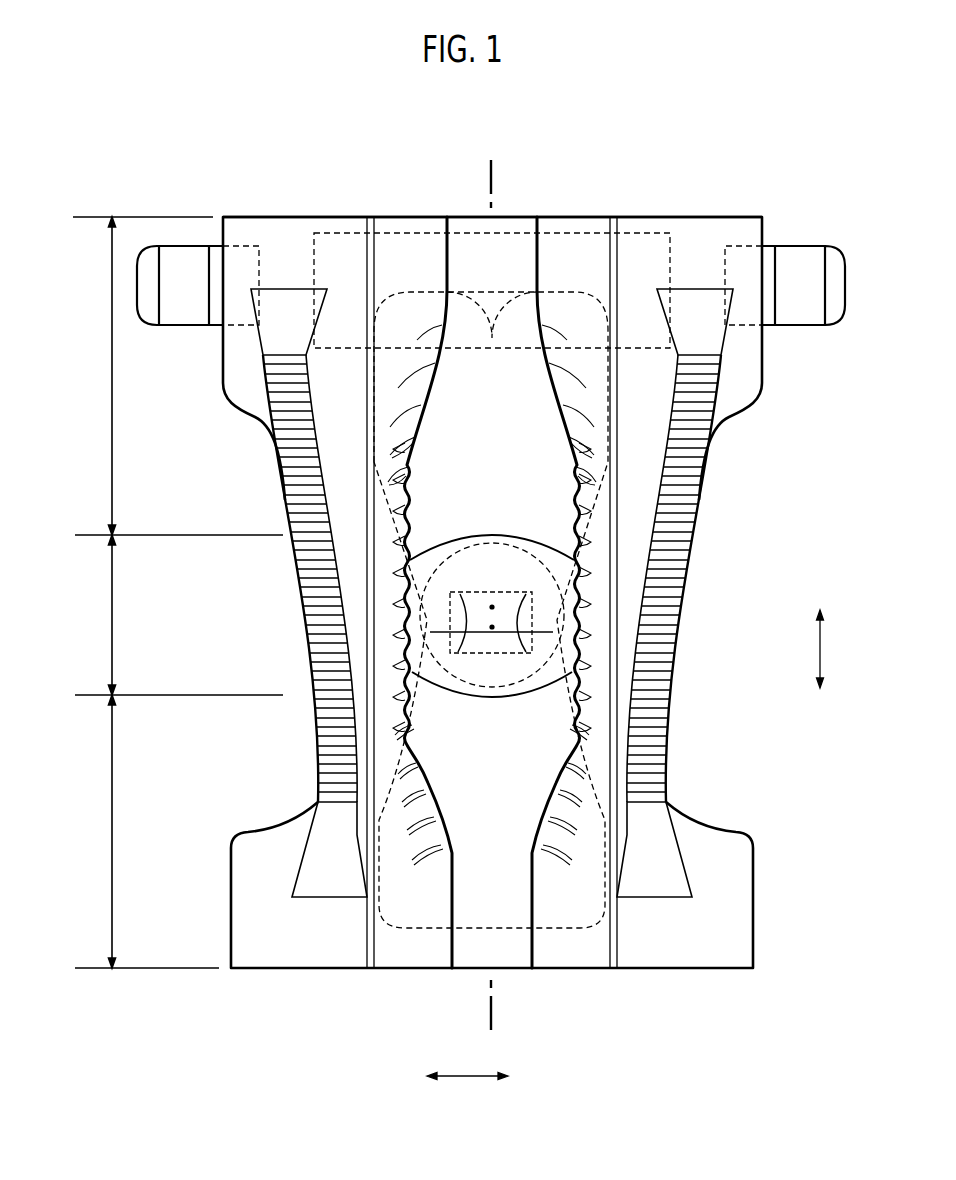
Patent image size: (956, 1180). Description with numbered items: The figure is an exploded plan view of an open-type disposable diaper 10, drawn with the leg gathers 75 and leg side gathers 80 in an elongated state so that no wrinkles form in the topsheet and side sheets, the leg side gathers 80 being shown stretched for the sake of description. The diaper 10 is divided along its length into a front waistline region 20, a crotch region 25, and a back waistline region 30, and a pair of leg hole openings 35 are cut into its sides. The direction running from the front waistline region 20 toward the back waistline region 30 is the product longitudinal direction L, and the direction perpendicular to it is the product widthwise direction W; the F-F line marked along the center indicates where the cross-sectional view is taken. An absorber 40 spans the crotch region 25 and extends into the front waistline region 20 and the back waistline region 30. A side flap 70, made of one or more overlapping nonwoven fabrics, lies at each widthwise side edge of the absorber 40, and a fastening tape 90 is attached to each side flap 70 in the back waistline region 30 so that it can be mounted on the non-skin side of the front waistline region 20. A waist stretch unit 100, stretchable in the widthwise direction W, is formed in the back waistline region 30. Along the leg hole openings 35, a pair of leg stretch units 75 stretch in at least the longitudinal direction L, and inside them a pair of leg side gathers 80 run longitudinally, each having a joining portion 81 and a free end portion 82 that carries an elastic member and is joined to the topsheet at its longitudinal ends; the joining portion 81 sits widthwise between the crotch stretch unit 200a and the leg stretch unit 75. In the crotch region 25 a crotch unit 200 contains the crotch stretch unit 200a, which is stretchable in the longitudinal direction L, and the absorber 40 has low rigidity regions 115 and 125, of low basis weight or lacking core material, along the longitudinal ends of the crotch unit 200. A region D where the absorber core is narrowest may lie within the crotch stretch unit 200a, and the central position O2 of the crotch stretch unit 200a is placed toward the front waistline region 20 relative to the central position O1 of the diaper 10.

The open-type disposable diaper 10 is at (765, 158).
The front waistline region 20 is at (147, 831).
The crotch region 25 is at (179, 615).
The back waistline region 30 is at (178, 376).
The leg hole openings 35 is at (246, 482).
The absorber 40 is at (537, 488).
The side flap 70 is at (697, 245).
The leg stretch units (leg gathers) 75 is at (662, 668).
The leg side gathers 80 is at (597, 572).
The joining portion 81 is at (613, 962).
The free end portion 82 is at (532, 966).
The fastening tape 90 is at (805, 265).
The waist stretch unit (waist gathers) 100 is at (572, 245).
The low rigidity region 115 is at (545, 691).
The low rigidity region 125 is at (553, 560).
The crotch unit 200 is at (437, 621).
The crotch stretch unit 200a is at (532, 615).
The region D is at (430, 633).
The central position of the diaper O1 is at (491, 604).
The central position of the crotch stretch unit O2 is at (492, 630).
The F-F line F is at (490, 594).
The product longitudinal direction L is at (829, 649).
The product widthwise direction W is at (467, 1091).